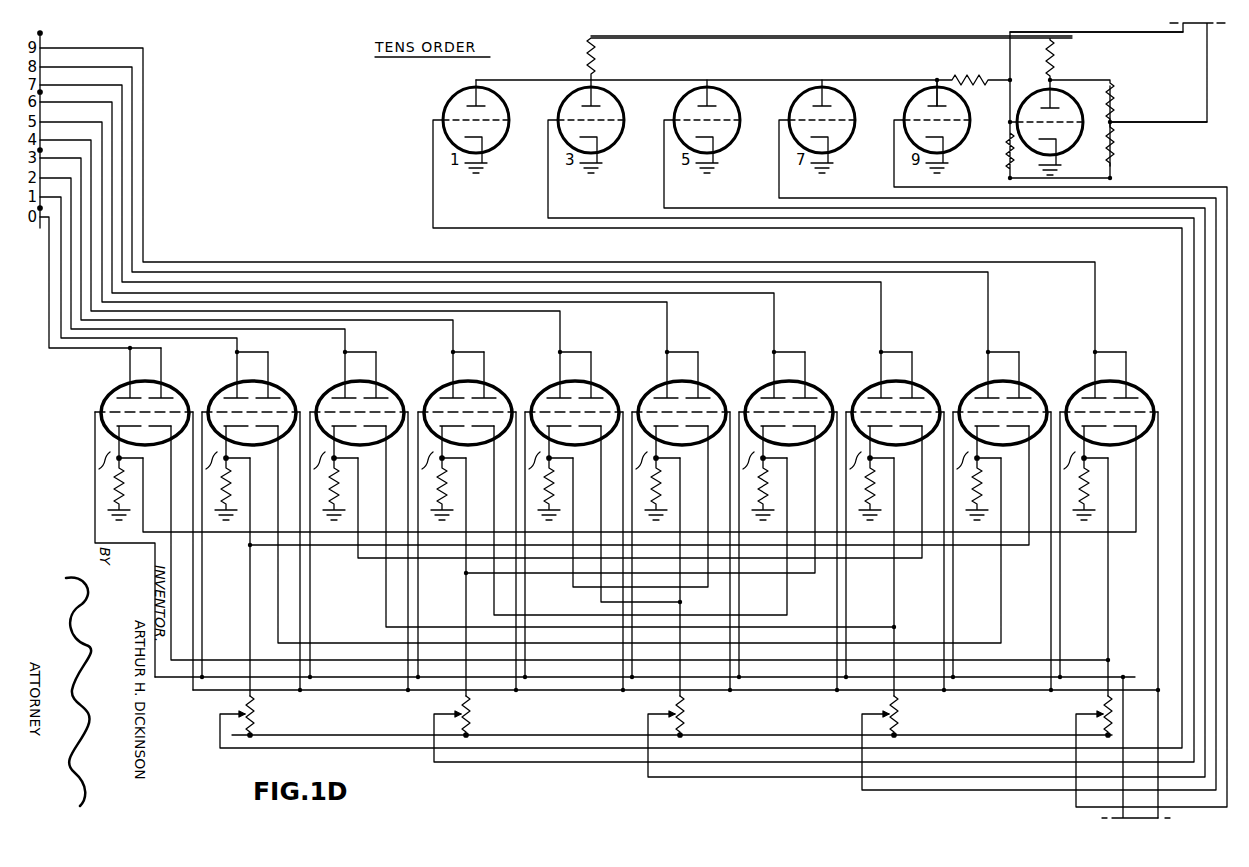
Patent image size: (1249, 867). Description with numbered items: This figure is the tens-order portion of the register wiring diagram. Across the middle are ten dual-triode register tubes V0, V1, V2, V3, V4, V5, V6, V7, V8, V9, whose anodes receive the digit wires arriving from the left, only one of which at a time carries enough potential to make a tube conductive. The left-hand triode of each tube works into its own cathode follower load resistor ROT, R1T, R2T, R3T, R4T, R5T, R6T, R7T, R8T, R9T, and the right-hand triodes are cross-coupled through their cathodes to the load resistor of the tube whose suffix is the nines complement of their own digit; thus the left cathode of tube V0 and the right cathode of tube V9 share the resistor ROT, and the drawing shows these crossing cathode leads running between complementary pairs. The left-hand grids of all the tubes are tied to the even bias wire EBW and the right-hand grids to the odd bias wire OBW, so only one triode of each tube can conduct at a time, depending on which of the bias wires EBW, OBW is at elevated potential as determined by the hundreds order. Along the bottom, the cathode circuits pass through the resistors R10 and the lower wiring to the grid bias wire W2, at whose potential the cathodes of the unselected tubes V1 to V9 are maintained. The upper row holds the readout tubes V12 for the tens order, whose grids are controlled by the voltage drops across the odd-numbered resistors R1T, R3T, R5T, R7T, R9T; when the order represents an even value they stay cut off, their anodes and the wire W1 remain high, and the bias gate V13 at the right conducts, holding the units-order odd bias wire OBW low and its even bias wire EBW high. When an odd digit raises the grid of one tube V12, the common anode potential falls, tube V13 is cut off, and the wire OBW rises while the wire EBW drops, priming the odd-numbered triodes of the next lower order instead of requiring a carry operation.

The register tube V0 is at (102, 406).
The register tube V1 is at (209, 406).
The register tube V2 is at (317, 406).
The register tube V3 is at (425, 406).
The register tube V4 is at (532, 406).
The register tube V5 is at (639, 406).
The register tube V6 is at (746, 406).
The register tube V7 is at (853, 406).
The register tube V8 is at (960, 406).
The register tube V9 is at (1067, 406).
The readout tube V12 is at (506, 136).
The bias gate V13 is at (1062, 97).
The cathode follower load resistor ROT is at (110, 486).
The cathode follower load resistor R1T is at (229, 497).
The cathode follower load resistor R2T is at (337, 497).
The cathode follower load resistor R3T is at (445, 499).
The cathode follower load resistor R4T is at (552, 500).
The cathode follower load resistor R5T is at (660, 500).
The cathode follower load resistor R6T is at (766, 500).
The cathode follower load resistor R7T is at (873, 500).
The cathode follower load resistor R8T is at (980, 500).
The cathode follower load resistor R9T is at (1087, 500).
The potentiometer resistor R10 is at (253, 711).
The even bias wire EBW is at (1128, 32).
The odd bias wire OBW is at (1178, 122).
The wire W1 is at (812, 38).
The grid bias wire W2 is at (1116, 173).